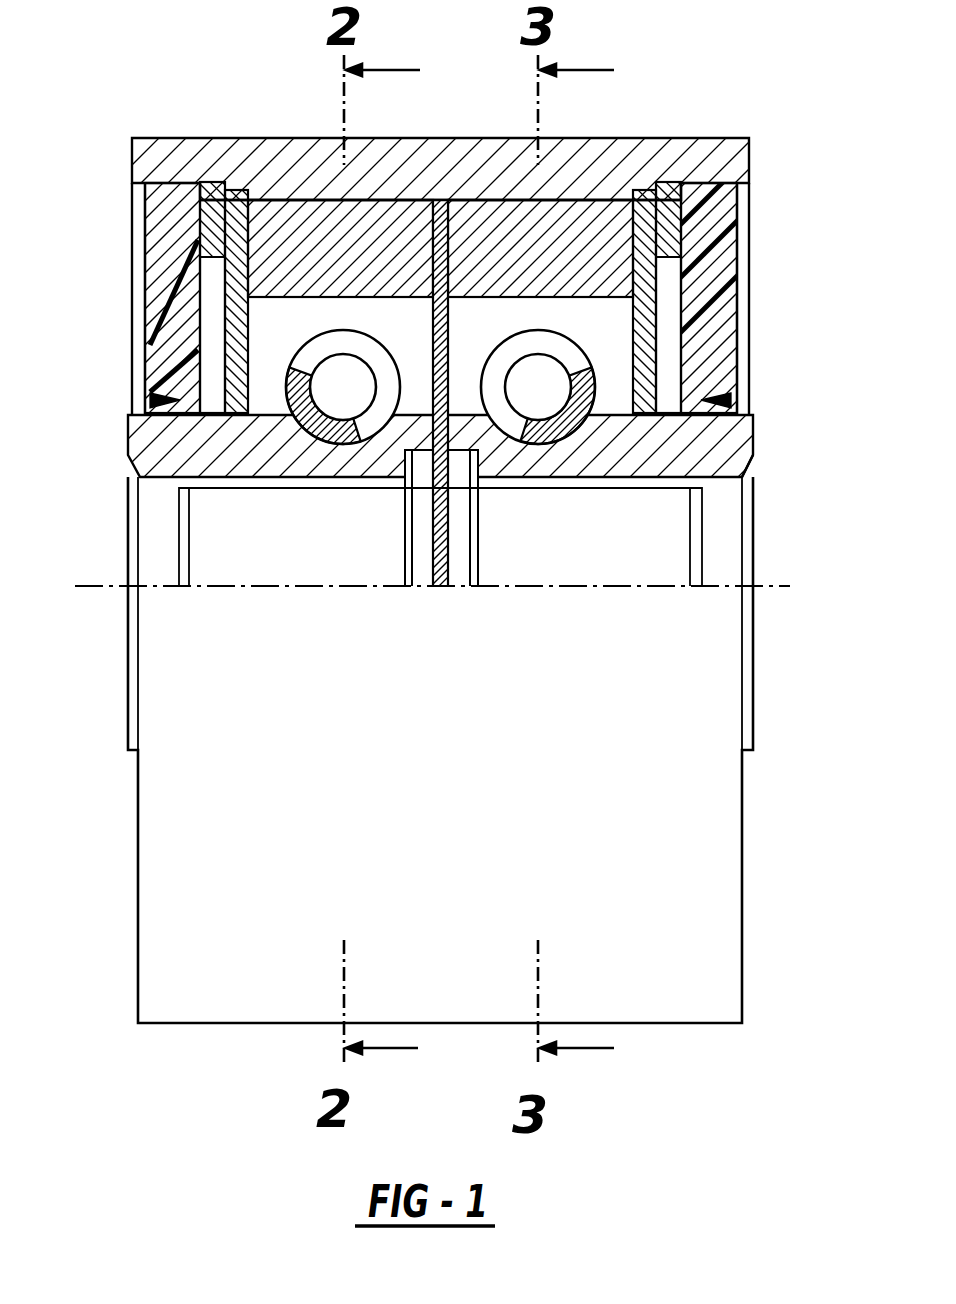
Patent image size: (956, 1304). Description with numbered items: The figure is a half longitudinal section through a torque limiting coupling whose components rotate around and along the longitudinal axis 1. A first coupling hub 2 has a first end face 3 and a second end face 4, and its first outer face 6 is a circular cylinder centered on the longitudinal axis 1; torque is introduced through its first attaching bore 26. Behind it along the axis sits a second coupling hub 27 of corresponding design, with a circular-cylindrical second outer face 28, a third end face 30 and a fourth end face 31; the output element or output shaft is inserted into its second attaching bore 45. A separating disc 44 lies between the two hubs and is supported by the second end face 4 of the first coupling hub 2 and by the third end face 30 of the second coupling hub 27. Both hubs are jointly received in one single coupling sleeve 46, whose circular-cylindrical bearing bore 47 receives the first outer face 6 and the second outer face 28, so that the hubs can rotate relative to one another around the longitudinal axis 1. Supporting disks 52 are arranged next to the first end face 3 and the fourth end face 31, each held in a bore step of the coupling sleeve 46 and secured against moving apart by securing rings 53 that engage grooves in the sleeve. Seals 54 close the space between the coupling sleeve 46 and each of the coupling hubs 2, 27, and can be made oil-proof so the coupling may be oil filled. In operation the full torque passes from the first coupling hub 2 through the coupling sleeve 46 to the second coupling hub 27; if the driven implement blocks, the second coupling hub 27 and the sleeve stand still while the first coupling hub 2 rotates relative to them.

The longitudinal axis 1 is at (315, 588).
The first coupling hub 2 is at (175, 478).
The first end face 3 is at (225, 350).
The second end face 4 is at (462, 380).
The first outer face 6 is at (263, 199).
The first attaching bore 26 is at (279, 487).
The second coupling hub 27 is at (712, 450).
The second outer face 28 is at (600, 198).
The third end face 30 is at (434, 244).
The fourth end face 31 is at (658, 305).
The separating disc 44 is at (449, 563).
The second attaching bore 45 is at (600, 485).
The coupling sleeve 46 is at (202, 965).
The bearing bore 47 is at (286, 200).
The supporting disks 52 is at (182, 195).
The securing rings 53 is at (223, 215).
The seals 54 is at (167, 324).